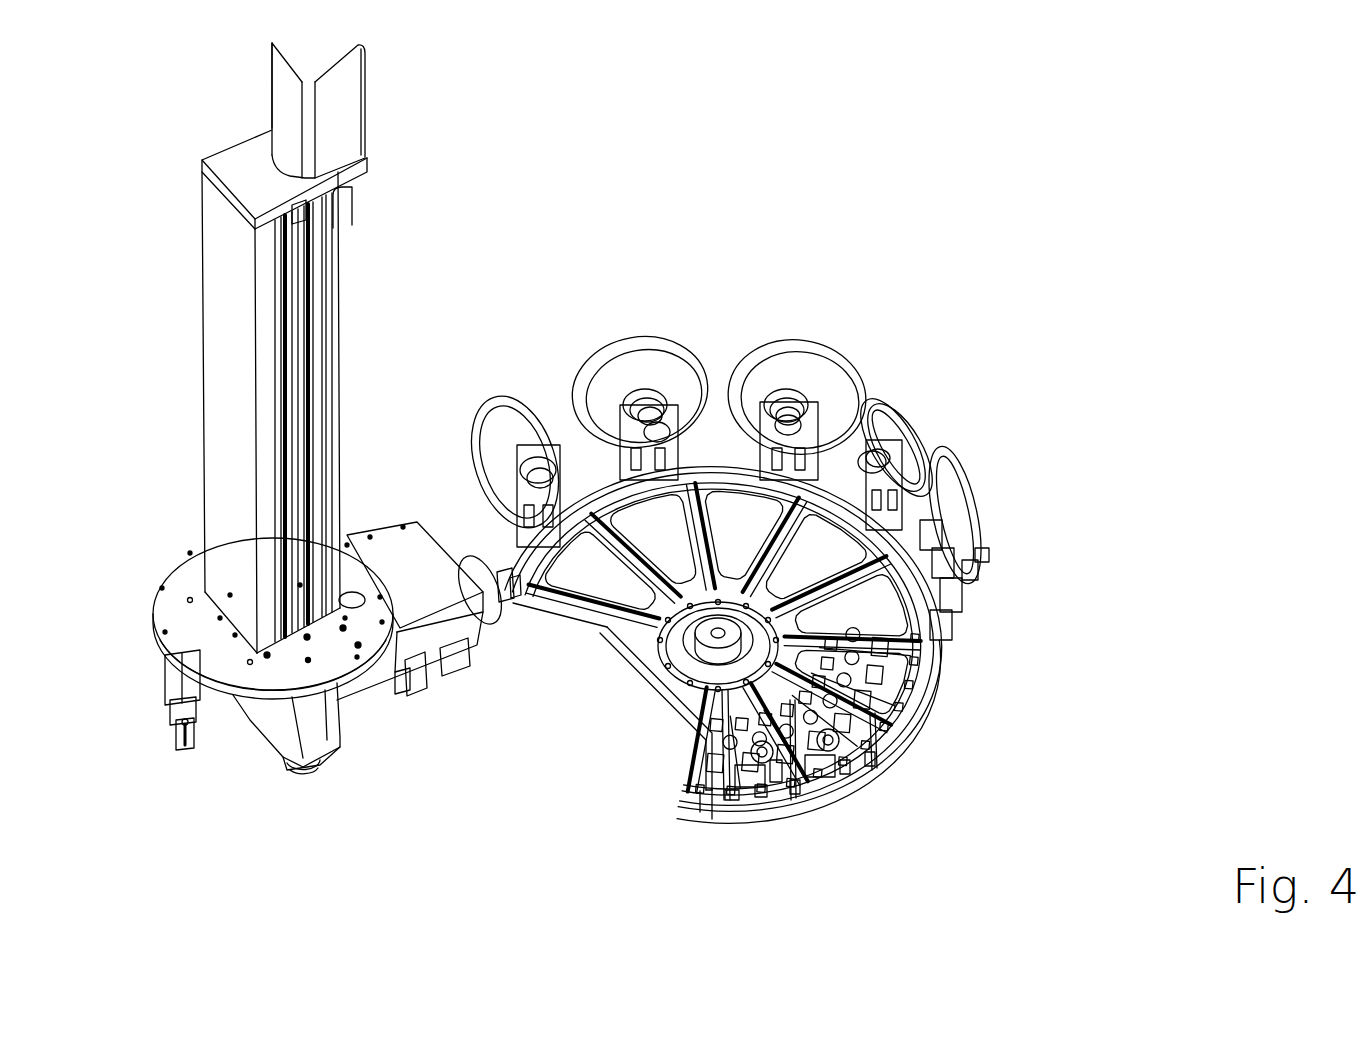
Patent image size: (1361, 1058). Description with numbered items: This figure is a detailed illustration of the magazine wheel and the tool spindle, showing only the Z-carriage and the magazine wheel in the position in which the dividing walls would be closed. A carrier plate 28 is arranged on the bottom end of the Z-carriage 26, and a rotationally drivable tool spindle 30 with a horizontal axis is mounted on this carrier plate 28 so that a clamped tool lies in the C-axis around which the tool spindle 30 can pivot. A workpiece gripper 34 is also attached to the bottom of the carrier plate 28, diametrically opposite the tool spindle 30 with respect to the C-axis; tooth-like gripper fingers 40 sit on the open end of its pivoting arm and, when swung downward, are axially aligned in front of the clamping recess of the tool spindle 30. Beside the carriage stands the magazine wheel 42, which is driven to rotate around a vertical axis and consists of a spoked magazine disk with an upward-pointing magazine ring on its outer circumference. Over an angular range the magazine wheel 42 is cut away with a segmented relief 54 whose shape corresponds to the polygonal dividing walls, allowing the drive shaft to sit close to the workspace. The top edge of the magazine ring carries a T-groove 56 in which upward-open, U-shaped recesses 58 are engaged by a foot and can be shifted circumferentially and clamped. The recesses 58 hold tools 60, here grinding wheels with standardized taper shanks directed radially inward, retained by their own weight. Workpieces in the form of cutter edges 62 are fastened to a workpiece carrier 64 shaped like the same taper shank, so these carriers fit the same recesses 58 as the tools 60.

The Z-carriage 26 is at (237, 467).
The carrier plate 28 is at (308, 660).
The tool spindle 30 is at (383, 673).
The workpiece gripper 34 is at (167, 705).
The gripper fingers 40 is at (193, 750).
The magazine wheel 42 is at (720, 480).
The segmented relief 54 is at (688, 713).
The T-groove 56 is at (590, 482).
The recesses 58 is at (817, 407).
The tools 60 is at (915, 432).
The cutter edges 62 is at (955, 670).
The workpiece carrier 64 is at (873, 767).